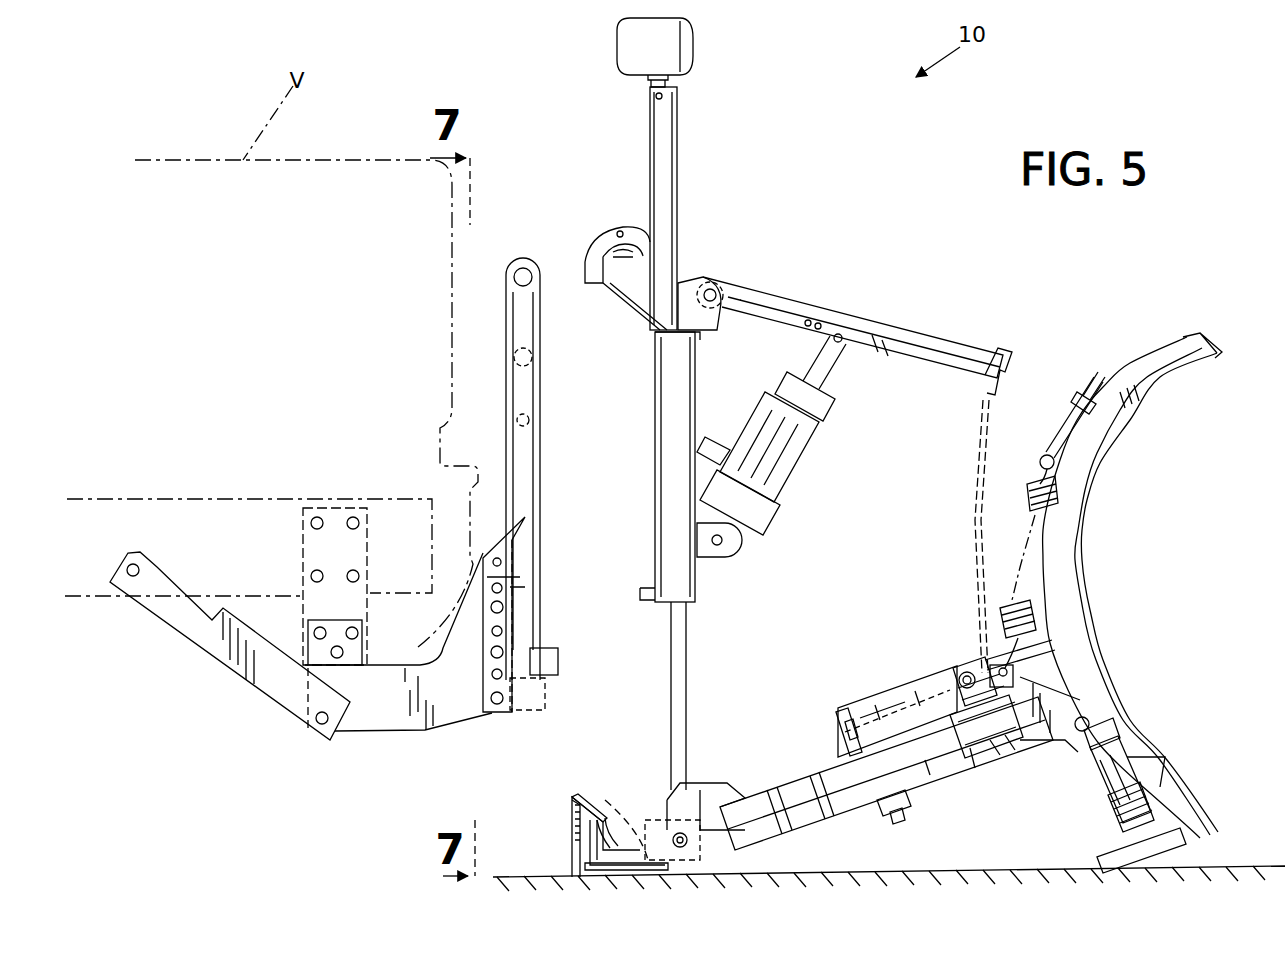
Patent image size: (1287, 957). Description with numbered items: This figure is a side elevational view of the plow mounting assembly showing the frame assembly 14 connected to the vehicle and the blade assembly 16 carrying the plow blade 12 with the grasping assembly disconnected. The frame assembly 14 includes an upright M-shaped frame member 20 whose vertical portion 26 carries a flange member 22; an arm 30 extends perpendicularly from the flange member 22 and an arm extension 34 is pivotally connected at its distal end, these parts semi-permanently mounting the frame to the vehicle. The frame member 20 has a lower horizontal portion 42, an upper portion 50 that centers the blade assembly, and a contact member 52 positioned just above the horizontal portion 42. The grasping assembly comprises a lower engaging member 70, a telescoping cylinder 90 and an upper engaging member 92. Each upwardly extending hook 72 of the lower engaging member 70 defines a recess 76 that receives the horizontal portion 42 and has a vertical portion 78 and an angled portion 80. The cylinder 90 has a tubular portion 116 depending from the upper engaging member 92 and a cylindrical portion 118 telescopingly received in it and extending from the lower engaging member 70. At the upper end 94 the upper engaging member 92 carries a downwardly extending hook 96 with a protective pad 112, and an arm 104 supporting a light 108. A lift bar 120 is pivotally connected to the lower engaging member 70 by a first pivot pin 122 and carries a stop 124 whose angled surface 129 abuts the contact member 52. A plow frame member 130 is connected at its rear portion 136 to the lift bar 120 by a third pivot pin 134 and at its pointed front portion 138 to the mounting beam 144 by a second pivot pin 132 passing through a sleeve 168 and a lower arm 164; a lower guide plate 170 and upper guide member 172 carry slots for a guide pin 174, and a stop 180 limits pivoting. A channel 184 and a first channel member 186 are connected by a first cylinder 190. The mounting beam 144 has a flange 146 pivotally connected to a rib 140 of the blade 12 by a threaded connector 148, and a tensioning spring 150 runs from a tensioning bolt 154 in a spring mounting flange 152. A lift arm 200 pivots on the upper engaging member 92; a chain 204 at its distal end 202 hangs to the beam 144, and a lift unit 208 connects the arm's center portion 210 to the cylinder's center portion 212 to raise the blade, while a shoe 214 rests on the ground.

The plow blade 12 is at (1111, 552).
The frame assembly 14 is at (366, 750).
The blade assembly 16 is at (794, 404).
The frame member 20 is at (490, 476).
The flange member 22 is at (517, 548).
The vertical portion 26 is at (541, 450).
The arm 30 is at (398, 718).
The arm extension 34 is at (268, 686).
The lower horizontal portion 42 is at (525, 713).
The upper portion 50 is at (530, 252).
The contact member 52 is at (546, 650).
The lower engaging member 70 is at (633, 848).
The hook 72 is at (579, 802).
The recess 76 is at (622, 845).
The vertical portion 78 is at (578, 850).
The angled portion 80 is at (570, 800).
The telescoping cylinder 90 is at (668, 561).
The upper engaging member 92 is at (692, 278).
The upper end 94 is at (690, 338).
The hook 96 is at (617, 240).
The arm 104 is at (678, 117).
The light 108 is at (696, 42).
The protective pad 112 is at (624, 258).
The tubular portion 116 is at (654, 378).
The cylindrical portion 118 is at (670, 640).
The lift bar 120 is at (716, 805).
The first pivot pin 122 is at (690, 842).
The stop 124 is at (705, 790).
The angled surface 129 is at (655, 815).
The plow frame member 130 is at (826, 771).
The second pivot pin 132 is at (988, 775).
The third pivot pin 134 is at (782, 800).
The rear portion 136 is at (750, 800).
The front portion 138 is at (952, 752).
The rib 140 is at (1165, 365).
The plow mounting beam 144 is at (1054, 690).
The flange 146 is at (1085, 672).
The threaded connector 148 is at (1090, 710).
The tensioning spring 150 is at (1058, 495).
The spring mounting flange 152 is at (1087, 400).
The tensioning bolt 154 is at (1065, 437).
The lower arm 164 is at (1150, 795).
The sleeve 168 is at (968, 781).
The lower guide plate 170 is at (926, 752).
The upper guide member 172 is at (889, 666).
The guide pin 174 is at (895, 816).
The stop 180 is at (935, 702).
The channel 184 is at (835, 720).
The first channel member 186 is at (983, 668).
The first cylinder 190 is at (875, 708).
The lift arm 200 is at (857, 311).
The distal end 202 is at (968, 375).
The chain 204 is at (975, 452).
The lift unit 208 is at (790, 458).
The center portion 210 is at (845, 323).
The center portion 212 is at (677, 545).
The shoe 214 is at (1186, 832).